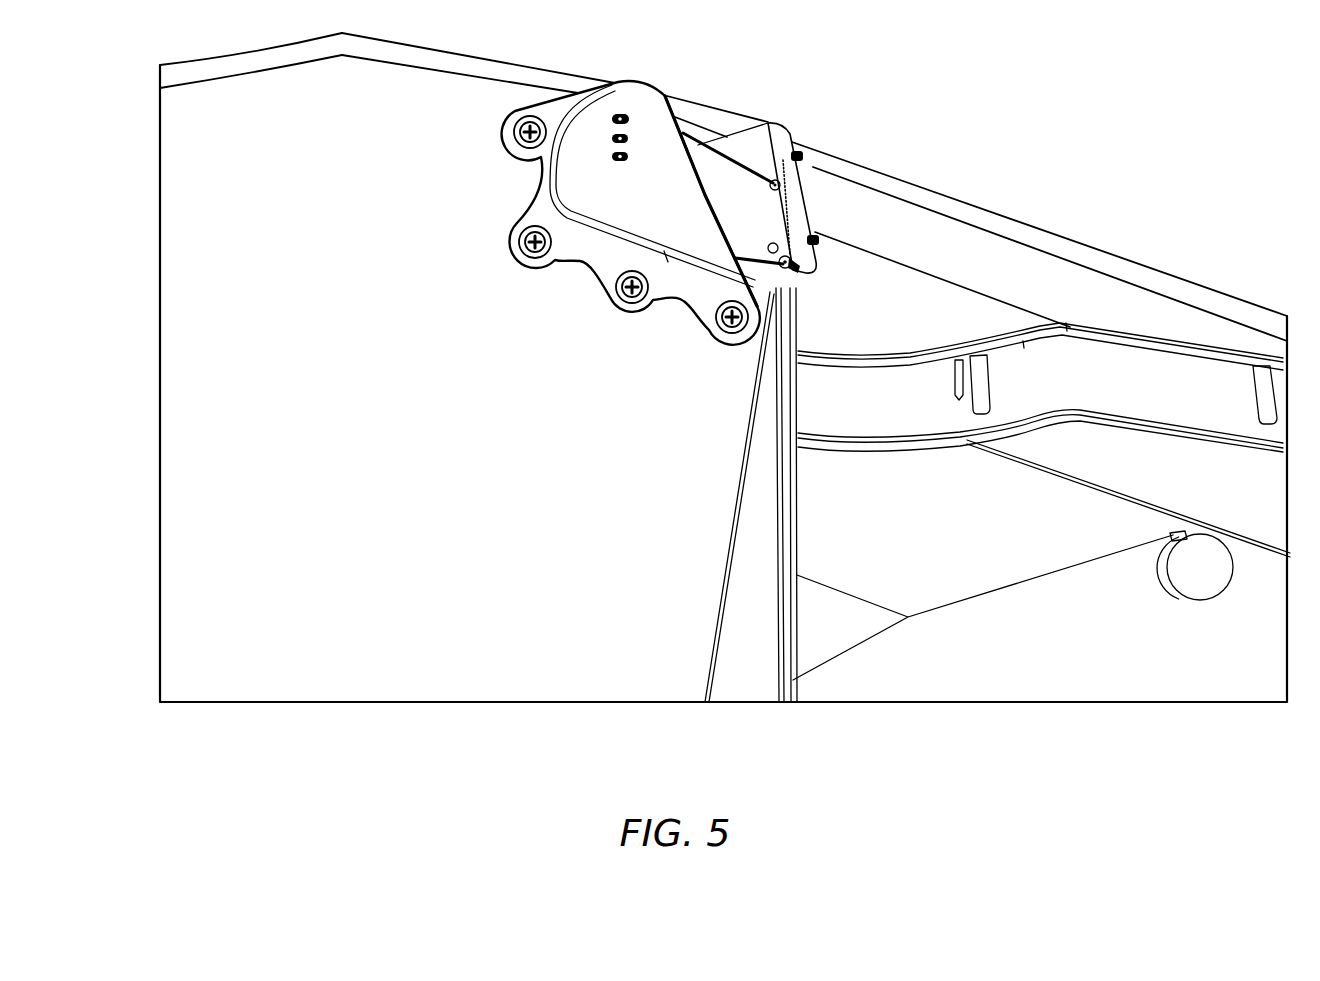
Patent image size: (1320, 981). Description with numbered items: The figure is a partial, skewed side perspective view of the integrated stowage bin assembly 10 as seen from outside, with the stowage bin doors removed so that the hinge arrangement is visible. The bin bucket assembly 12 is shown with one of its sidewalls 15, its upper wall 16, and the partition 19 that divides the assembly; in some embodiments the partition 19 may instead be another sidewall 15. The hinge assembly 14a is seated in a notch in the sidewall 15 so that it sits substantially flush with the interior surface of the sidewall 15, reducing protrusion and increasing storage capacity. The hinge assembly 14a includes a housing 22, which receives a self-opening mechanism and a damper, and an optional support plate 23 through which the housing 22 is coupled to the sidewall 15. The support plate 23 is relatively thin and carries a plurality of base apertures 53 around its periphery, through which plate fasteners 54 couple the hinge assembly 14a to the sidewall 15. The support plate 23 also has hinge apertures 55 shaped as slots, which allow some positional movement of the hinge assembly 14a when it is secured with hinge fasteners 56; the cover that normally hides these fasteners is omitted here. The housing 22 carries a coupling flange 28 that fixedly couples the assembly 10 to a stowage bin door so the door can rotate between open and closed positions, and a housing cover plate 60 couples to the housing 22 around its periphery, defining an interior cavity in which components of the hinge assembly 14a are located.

The integrated stowage bin assembly 10 is at (1158, 71).
The bin bucket assembly 12 is at (1103, 259).
The hinge assembly 14a is at (655, 70).
The sidewall 15 is at (215, 367).
The upper wall 16 is at (972, 213).
The partition 19 is at (1163, 372).
The housing 22 is at (751, 138).
The support plate 23 is at (533, 210).
The coupling flange 28 is at (785, 140).
The base apertures 53 is at (516, 107).
The plate fasteners 54 is at (521, 131).
The hinge apertures 55 is at (648, 117).
The hinge fasteners 56 is at (610, 117).
The housing cover plate 60 is at (777, 208).